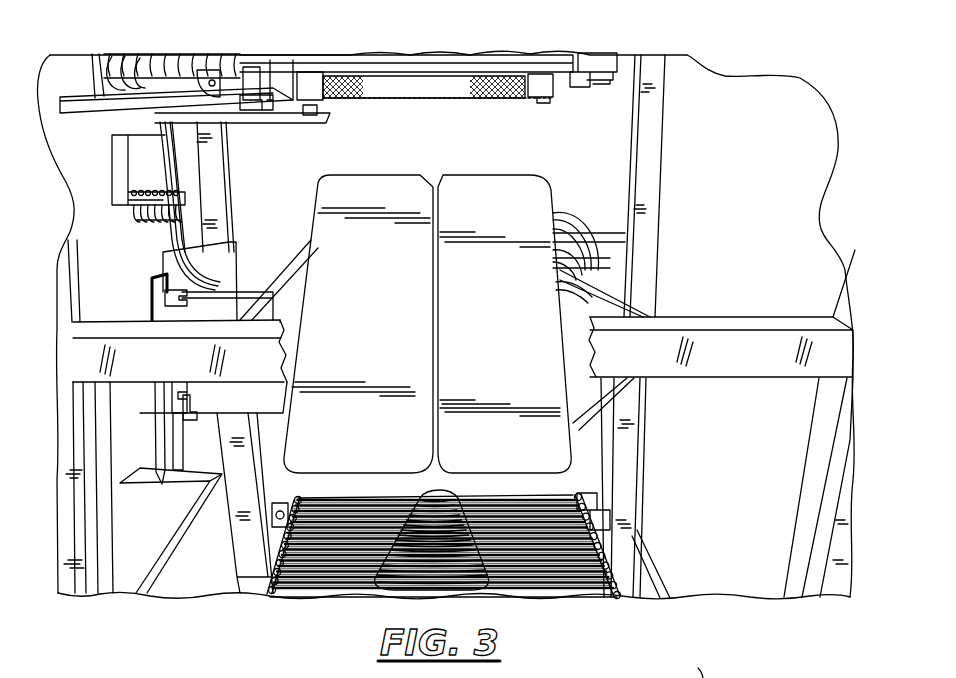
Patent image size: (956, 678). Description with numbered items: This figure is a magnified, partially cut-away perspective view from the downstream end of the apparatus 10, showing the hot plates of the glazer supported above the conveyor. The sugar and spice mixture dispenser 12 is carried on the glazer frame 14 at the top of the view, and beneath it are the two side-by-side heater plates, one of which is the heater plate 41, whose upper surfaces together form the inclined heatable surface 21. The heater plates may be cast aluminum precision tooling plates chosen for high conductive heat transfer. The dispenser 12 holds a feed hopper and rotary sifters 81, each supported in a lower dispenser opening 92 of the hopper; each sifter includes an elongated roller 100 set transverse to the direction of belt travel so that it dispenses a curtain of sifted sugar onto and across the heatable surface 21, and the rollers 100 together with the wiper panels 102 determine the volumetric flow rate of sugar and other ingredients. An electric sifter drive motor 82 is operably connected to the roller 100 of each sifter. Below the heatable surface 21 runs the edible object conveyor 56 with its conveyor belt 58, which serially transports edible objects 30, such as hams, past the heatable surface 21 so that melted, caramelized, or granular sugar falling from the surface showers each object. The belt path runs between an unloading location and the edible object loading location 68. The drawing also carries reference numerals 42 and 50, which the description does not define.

The apparatus 10 is at (694, 99).
The sugar and spice mixture dispenser 12 is at (539, 54).
The glazer frame 14 is at (652, 66).
The heatable surface 21 is at (472, 198).
The edible object 30 is at (453, 537).
The heater plate 41 is at (382, 186).
The second material supply pad 42 is at (455, 183).
The build platform assembly 50 is at (644, 669).
The edible object conveyor 56 is at (622, 577).
The conveyor belt 58 is at (557, 557).
The edible object loading location 68 is at (336, 496).
The rotary sifter 81 is at (422, 83).
The sifter drive motor 82 is at (150, 54).
The lower dispenser opening 92 is at (495, 77).
The elongated roller 100 is at (366, 83).
The wiper panel 102 is at (329, 55).